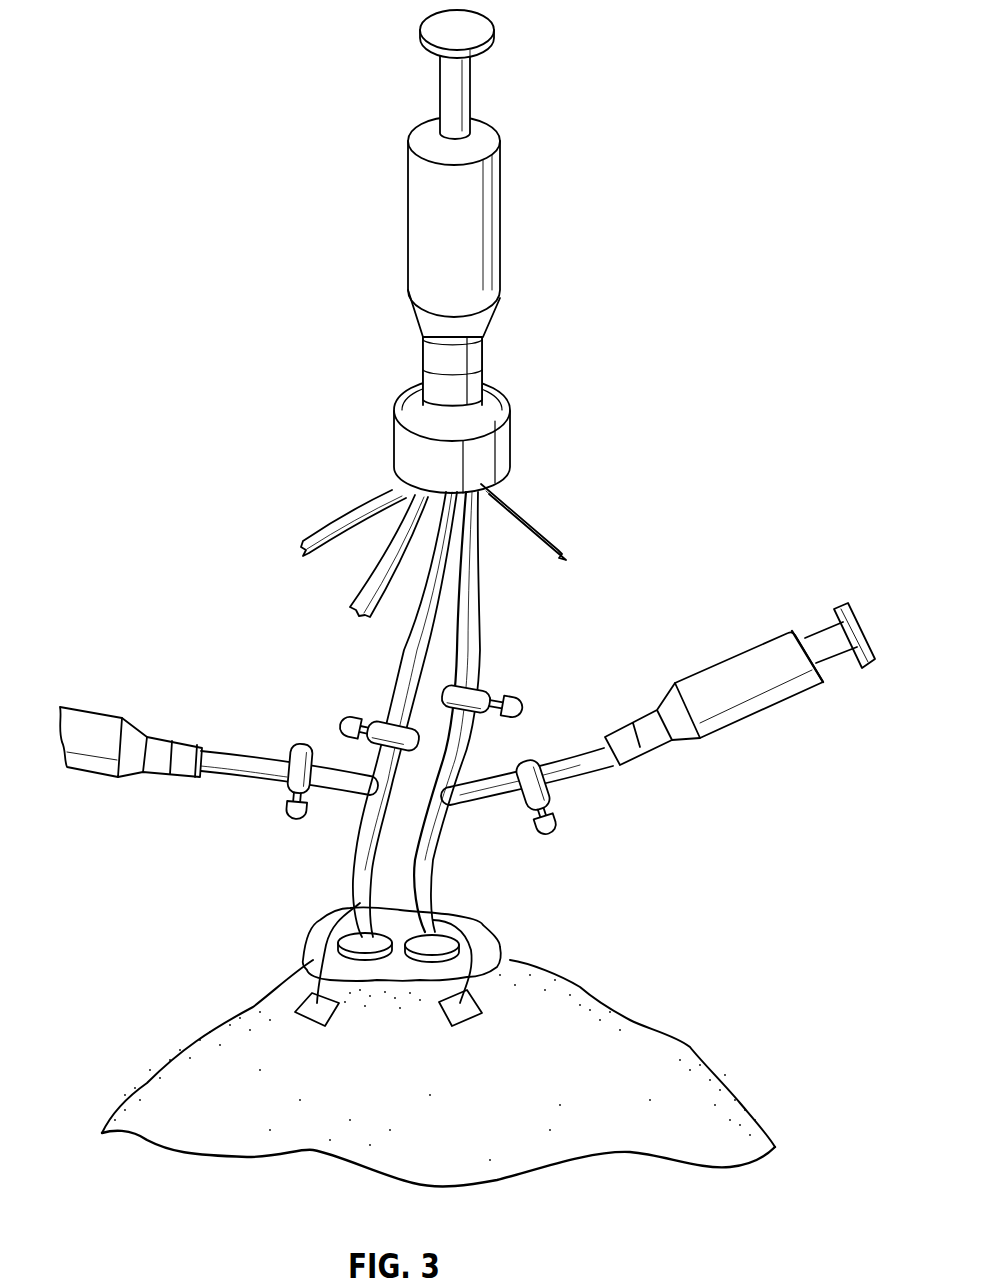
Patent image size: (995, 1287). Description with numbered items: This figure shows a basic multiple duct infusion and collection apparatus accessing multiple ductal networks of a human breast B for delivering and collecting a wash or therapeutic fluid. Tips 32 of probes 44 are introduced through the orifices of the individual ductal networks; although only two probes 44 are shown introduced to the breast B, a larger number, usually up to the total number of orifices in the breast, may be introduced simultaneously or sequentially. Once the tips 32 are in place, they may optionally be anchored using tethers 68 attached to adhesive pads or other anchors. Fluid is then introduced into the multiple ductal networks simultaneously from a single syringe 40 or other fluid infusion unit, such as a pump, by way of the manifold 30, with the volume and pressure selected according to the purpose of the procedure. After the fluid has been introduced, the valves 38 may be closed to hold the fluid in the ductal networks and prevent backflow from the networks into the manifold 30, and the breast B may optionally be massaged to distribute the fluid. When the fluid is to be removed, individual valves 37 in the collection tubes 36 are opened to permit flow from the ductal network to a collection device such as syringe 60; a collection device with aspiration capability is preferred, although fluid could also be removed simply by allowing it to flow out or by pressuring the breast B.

The manifold 30 is at (498, 445).
The tips 32 is at (416, 908).
The collection tubes 36 is at (240, 753).
The valves 37 is at (287, 781).
The valves 38 is at (378, 718).
The syringe 40 is at (490, 222).
The probes 44 is at (383, 563).
The syringe 60 is at (88, 777).
The tethers 68 is at (305, 948).
The breast B is at (663, 1048).